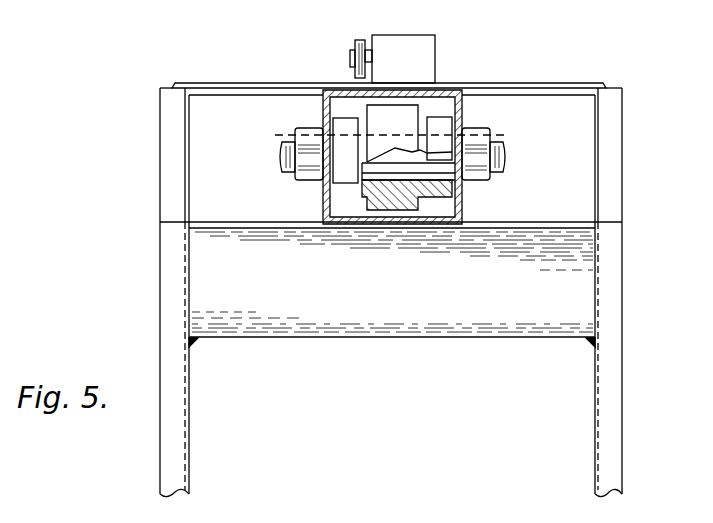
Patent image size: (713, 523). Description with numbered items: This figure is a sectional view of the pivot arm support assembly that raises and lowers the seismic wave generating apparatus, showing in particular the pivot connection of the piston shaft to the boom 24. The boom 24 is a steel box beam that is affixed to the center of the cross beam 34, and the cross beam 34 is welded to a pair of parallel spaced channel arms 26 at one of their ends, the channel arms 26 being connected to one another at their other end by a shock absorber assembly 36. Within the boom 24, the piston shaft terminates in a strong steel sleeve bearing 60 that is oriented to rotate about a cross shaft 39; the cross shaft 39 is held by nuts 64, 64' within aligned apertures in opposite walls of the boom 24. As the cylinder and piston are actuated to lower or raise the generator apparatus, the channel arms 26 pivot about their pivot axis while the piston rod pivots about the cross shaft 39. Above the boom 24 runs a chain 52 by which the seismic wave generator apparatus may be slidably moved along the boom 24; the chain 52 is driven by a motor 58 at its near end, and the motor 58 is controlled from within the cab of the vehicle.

The cantilever mounted boom 24 is at (433, 225).
The channel arms 26 is at (159, 156).
The cross beam 34 is at (543, 83).
The shock absorber assembly 36 is at (22, 22).
The cross shaft 39 is at (505, 152).
The chain 52 is at (357, 40).
The motor 58 is at (436, 48).
The sleeve bearing 60 is at (380, 198).
The nut 64 is at (498, 169).
The nut 64' is at (282, 166).